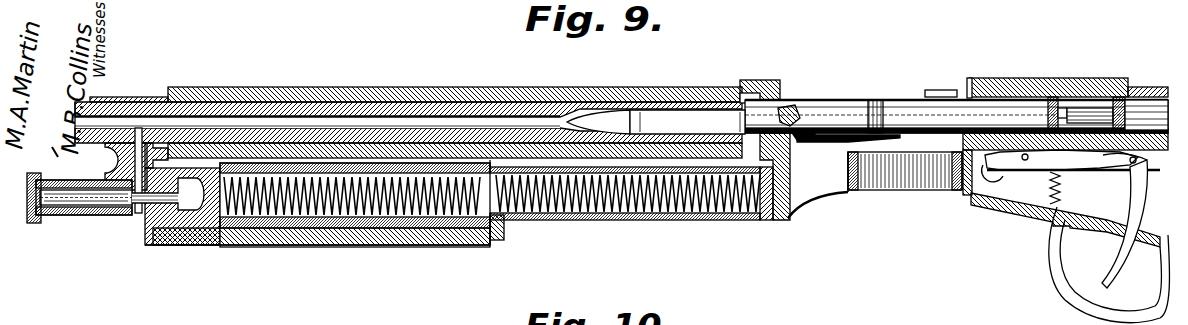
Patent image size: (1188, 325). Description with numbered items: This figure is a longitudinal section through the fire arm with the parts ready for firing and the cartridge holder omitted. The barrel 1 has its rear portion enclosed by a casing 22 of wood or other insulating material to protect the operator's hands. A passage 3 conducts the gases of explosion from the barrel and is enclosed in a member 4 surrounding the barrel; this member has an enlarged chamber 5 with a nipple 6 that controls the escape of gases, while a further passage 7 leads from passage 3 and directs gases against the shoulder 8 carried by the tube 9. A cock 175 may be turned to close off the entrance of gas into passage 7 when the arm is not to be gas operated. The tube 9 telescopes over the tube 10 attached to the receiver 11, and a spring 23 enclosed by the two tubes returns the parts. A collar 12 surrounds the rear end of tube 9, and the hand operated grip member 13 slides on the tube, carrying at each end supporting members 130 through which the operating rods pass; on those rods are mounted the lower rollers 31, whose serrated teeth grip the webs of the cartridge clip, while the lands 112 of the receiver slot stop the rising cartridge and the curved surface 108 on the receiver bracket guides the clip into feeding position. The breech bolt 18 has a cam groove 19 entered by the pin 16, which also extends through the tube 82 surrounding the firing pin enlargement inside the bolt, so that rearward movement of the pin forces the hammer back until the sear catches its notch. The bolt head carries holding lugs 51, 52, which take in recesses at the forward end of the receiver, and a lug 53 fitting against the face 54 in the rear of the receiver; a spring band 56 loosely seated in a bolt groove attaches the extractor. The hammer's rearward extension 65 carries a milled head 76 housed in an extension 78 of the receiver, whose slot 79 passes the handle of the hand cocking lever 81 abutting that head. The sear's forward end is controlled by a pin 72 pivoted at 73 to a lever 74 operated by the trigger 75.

The barrel 1 is at (484, 101).
The passage 3 is at (133, 158).
The member 4 is at (138, 97).
The enlarged chamber 5 is at (86, 210).
The nipple 6 is at (35, 224).
The passage 7 is at (142, 205).
The shoulder 8 is at (212, 217).
The tube 9 is at (288, 230).
The tube 10 is at (558, 222).
The receiver 11 is at (728, 82).
The collar 12 is at (497, 241).
The hand operated grip member 13 is at (368, 245).
The pin 16 is at (790, 107).
The breech bolt 18 is at (820, 108).
The cam groove 19 is at (822, 143).
The casing 22 is at (358, 88).
The spring 23 is at (426, 206).
The lower rollers 31 is at (920, 192).
The holding lug 51 is at (748, 212).
The holding lug 52 is at (768, 92).
The lug 53 is at (941, 89).
The face 54 is at (968, 82).
The spring band 56 is at (877, 106).
The rearward extension 65 is at (1093, 140).
The pin 72 is at (979, 173).
The pivot 73 is at (1015, 203).
The lever 74 is at (1043, 162).
The trigger 75 is at (1133, 178).
The milled head 76 is at (1118, 96).
The extension 78 is at (1086, 106).
The slot 79 is at (1140, 115).
The hand cocking lever 81 is at (1053, 80).
The tube 82 is at (810, 208).
The curved surface 108 is at (852, 194).
The lands 112 is at (884, 190).
The supporting members 130 is at (156, 250).
The cock 175 is at (125, 188).